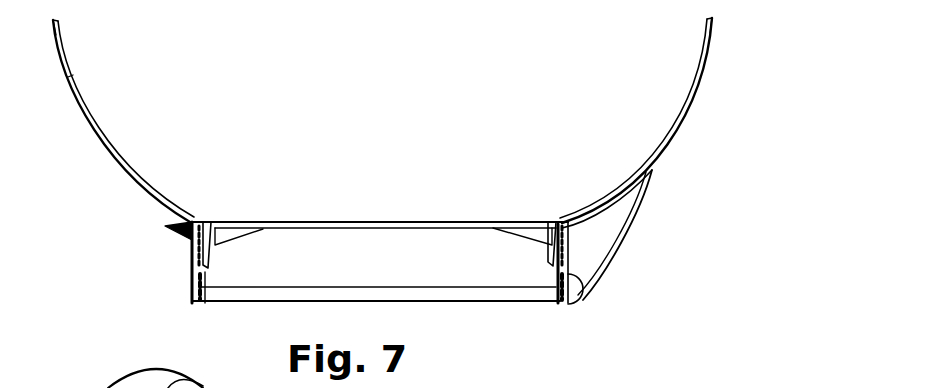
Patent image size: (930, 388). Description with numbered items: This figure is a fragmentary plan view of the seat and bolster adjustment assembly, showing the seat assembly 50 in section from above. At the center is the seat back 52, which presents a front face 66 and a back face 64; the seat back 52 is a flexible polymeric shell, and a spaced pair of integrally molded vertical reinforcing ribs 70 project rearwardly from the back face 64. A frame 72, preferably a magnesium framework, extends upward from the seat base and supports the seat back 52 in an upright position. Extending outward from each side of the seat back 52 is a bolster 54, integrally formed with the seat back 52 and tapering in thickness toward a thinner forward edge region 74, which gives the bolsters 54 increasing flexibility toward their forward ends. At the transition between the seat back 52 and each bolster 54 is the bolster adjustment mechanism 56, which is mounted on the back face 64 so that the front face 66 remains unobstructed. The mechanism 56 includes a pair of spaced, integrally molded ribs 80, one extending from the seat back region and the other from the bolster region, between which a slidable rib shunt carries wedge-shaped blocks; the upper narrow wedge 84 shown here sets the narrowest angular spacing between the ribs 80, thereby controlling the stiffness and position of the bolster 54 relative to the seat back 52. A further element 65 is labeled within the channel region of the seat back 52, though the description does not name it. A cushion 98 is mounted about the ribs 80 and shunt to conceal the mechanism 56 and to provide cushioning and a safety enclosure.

The seat assembly 50 is at (712, 193).
The seat back 52 is at (484, 219).
The bolsters 54 is at (100, 137).
The bolster adjustment mechanism 56 is at (602, 254).
The back face 64 is at (423, 228).
The locking tab 65 is at (212, 243).
The front face 66 is at (380, 221).
The vertical reinforcing ribs 70 is at (189, 270).
The frame 72 is at (467, 302).
The forward edge region 74 is at (66, 44).
The ribs 80 is at (536, 226).
The upper narrow wedge 84 is at (569, 226).
The cushion 98 is at (639, 232).